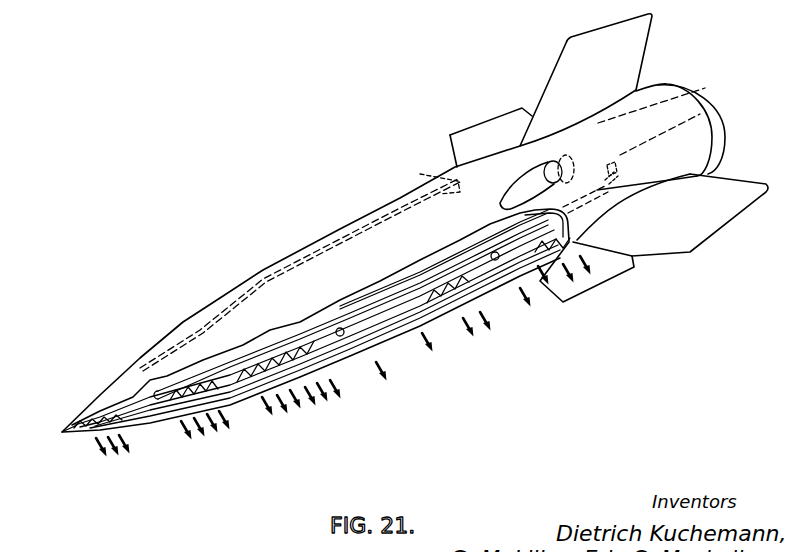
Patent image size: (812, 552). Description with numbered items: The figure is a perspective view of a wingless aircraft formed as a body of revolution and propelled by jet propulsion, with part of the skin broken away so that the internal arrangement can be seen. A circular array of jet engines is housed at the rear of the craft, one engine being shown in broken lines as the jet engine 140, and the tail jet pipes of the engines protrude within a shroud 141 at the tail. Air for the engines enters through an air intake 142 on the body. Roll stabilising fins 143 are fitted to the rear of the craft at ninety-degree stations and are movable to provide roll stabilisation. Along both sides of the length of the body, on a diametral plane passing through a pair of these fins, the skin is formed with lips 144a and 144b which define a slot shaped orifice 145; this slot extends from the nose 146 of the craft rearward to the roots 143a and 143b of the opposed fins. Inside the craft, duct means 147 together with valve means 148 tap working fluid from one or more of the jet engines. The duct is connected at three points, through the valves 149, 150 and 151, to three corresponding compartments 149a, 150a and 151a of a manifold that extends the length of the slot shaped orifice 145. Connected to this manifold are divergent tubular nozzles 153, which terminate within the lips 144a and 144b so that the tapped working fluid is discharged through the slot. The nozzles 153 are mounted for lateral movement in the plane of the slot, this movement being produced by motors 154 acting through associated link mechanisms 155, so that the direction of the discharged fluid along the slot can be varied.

The jet engine 140 is at (657, 110).
The shroud 141 is at (714, 116).
The air intake 142 is at (528, 178).
The roll stabilising fin 143 is at (563, 72).
The fin root 143a is at (591, 237).
The fin root 143b is at (419, 178).
The lip 144a is at (132, 399).
The lip 144b is at (128, 414).
The slot shaped orifice 145 is at (238, 400).
The nose 146 is at (62, 430).
The duct means 147 is at (596, 208).
The valve means 148 is at (621, 177).
The valve 149 is at (157, 400).
The manifold compartment 149a is at (216, 393).
The valve 150 is at (336, 330).
The manifold compartment 150a is at (336, 346).
The valve 151 is at (500, 259).
The manifold compartment 151a is at (470, 264).
The divergent tubular nozzle 153 is at (445, 303).
The motor 154 is at (75, 418).
The link mechanism 155 is at (86, 435).